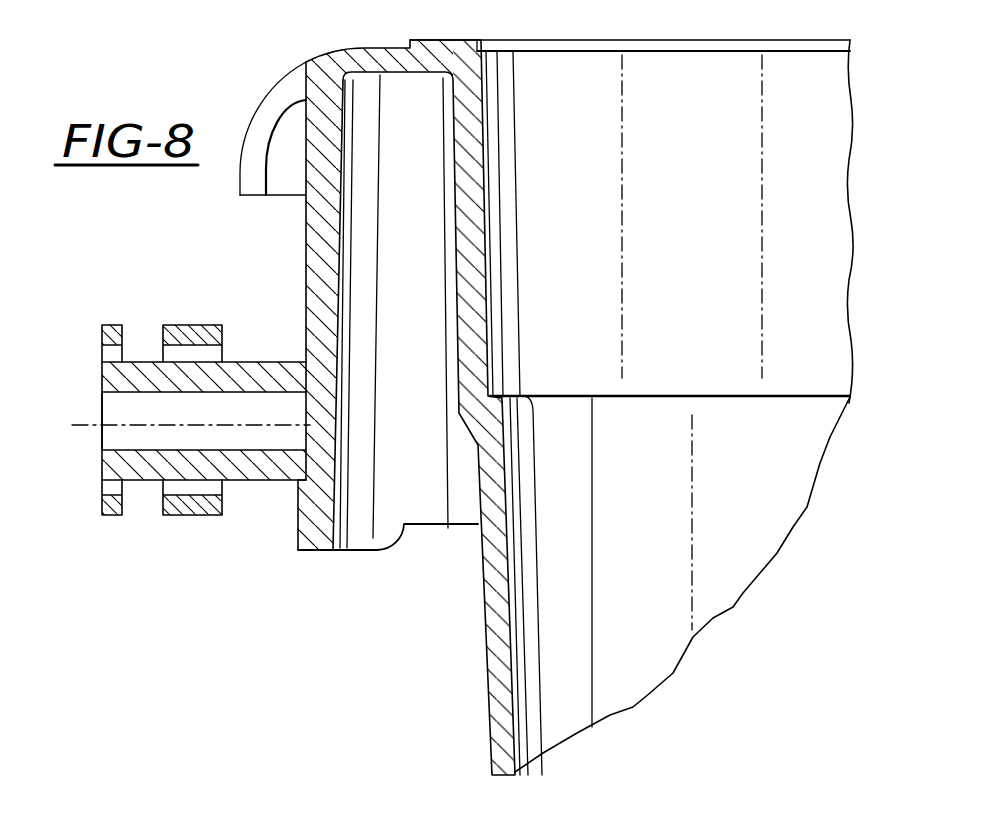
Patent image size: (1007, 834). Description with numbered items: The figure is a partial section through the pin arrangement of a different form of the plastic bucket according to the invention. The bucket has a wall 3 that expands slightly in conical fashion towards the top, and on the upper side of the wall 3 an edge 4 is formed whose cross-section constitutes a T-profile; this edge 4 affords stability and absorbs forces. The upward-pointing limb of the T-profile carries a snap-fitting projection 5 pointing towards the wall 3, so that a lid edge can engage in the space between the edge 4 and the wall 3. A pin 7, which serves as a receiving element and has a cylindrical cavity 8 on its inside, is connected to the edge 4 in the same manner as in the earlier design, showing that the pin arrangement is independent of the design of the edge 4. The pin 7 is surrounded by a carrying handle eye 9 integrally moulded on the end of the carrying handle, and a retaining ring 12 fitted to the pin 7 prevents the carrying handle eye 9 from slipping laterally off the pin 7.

The wall 3 is at (688, 199).
The edge 4 is at (310, 275).
The snap-fitting projection 5 is at (260, 125).
The pin 7 is at (255, 370).
The cylindrical cavity 8 is at (210, 418).
The carrying handle eye 9 is at (176, 330).
The retaining ring 12 is at (103, 328).